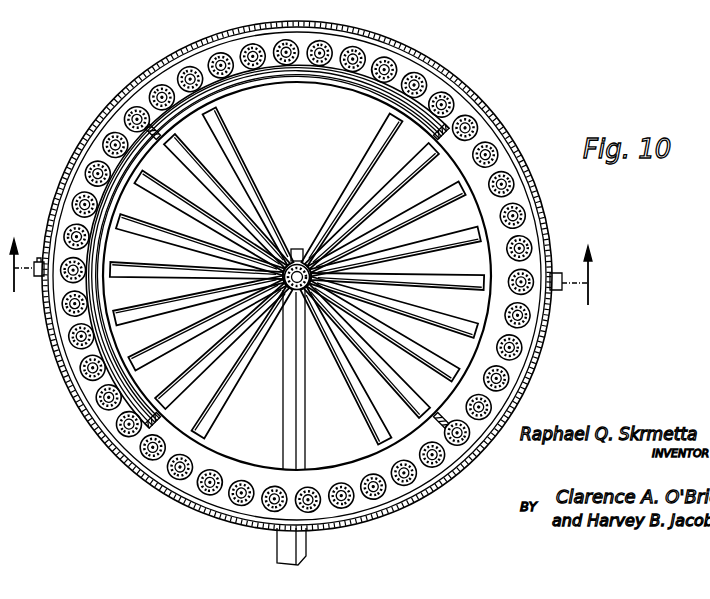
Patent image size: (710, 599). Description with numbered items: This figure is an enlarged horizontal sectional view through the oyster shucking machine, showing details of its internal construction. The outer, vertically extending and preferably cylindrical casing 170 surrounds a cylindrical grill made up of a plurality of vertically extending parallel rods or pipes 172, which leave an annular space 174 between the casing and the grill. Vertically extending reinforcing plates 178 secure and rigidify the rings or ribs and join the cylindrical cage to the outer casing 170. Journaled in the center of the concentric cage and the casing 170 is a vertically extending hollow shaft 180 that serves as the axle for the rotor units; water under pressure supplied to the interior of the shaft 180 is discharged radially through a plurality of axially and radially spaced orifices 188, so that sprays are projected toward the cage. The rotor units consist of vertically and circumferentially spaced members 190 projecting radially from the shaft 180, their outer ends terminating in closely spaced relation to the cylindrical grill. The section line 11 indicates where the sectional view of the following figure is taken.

The outer cylindrical casing 170 is at (452, 75).
The vertically extending parallel rods or pipes 172 is at (335, 66).
The annular space 174 is at (381, 47).
The reinforcing plates 178 is at (150, 114).
The hollow shaft 180 is at (306, 262).
The orifices 188 is at (297, 249).
The radially projecting members 190 is at (255, 183).
The section line 11- 11 is at (304, 262).